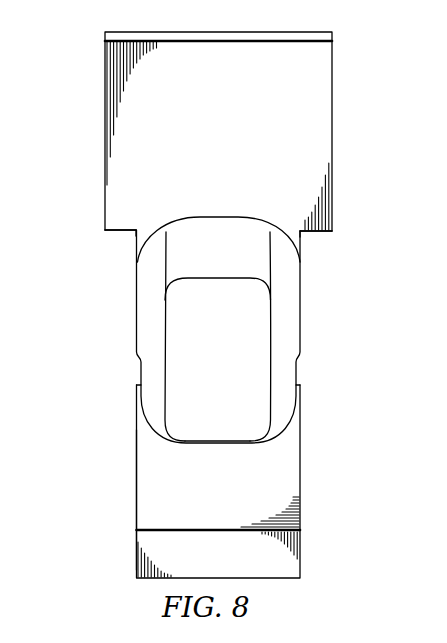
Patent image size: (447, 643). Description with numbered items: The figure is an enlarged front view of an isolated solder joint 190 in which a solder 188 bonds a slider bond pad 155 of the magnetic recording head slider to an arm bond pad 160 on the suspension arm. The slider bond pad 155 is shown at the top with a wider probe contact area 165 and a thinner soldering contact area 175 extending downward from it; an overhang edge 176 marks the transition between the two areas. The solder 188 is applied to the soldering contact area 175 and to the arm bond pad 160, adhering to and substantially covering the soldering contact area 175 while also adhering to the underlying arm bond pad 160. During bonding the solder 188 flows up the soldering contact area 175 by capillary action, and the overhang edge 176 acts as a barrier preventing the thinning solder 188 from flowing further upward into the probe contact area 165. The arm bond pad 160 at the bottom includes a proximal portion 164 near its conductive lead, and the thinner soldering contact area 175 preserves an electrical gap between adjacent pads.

The slider bond pad 155 is at (333, 83).
The probe contact area 165 is at (315, 135).
The soldering contact area 175 is at (297, 238).
The overhang edge 176 is at (120, 233).
The solder 188 is at (288, 317).
The solder joint 190 is at (103, 322).
The arm bond pad 160 is at (300, 482).
The proximal portion 164 is at (147, 500).